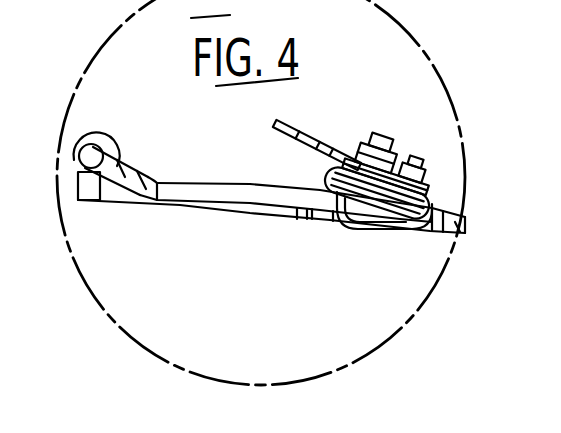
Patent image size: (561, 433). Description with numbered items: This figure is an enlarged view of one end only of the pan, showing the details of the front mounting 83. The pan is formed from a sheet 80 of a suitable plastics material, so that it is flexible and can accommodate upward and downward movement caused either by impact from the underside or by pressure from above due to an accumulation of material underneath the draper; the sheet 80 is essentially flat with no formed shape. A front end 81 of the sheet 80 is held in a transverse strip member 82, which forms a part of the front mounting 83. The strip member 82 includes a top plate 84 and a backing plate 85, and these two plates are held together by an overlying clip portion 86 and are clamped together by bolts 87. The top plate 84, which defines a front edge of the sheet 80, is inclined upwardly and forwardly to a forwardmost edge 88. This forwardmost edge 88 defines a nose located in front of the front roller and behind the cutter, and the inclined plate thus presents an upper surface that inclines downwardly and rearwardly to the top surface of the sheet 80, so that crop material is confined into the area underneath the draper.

The sheet 80 is at (460, 233).
The front end 81 is at (375, 226).
The transverse strip member 82 is at (426, 172).
The front mounting 83 is at (387, 108).
The top plate 84 is at (429, 193).
The backing plate 85 is at (350, 204).
The clip portion 86 is at (306, 200).
The bolts 87 is at (413, 148).
The forwardmost edge 88 is at (278, 117).